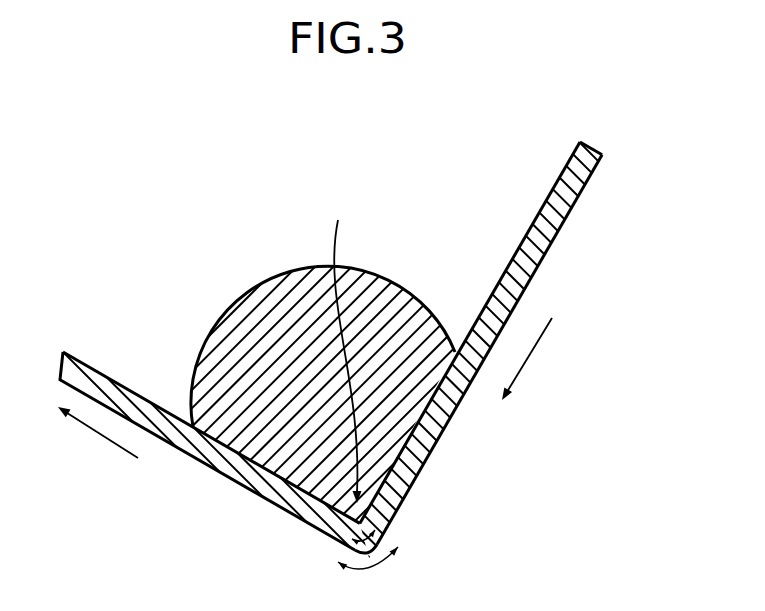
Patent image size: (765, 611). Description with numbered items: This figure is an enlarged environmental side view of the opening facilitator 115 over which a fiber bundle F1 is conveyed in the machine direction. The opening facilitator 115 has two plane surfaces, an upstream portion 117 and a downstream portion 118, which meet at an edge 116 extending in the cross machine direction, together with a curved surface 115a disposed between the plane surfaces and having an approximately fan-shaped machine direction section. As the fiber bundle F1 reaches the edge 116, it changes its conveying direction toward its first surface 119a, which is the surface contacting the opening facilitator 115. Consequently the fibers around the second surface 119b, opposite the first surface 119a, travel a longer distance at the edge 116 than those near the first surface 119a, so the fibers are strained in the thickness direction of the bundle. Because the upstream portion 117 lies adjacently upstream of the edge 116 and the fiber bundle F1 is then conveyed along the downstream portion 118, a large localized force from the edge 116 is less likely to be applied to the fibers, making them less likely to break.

The opening facilitator 115 is at (382, 331).
The curved surface 115a is at (215, 333).
The edge 116 is at (339, 343).
The upstream portion 117 is at (382, 350).
The downstream portion 118 is at (239, 455).
The first surface 119a is at (524, 237).
The second surface 119b is at (562, 237).
The fiber bundle F1 is at (616, 118).